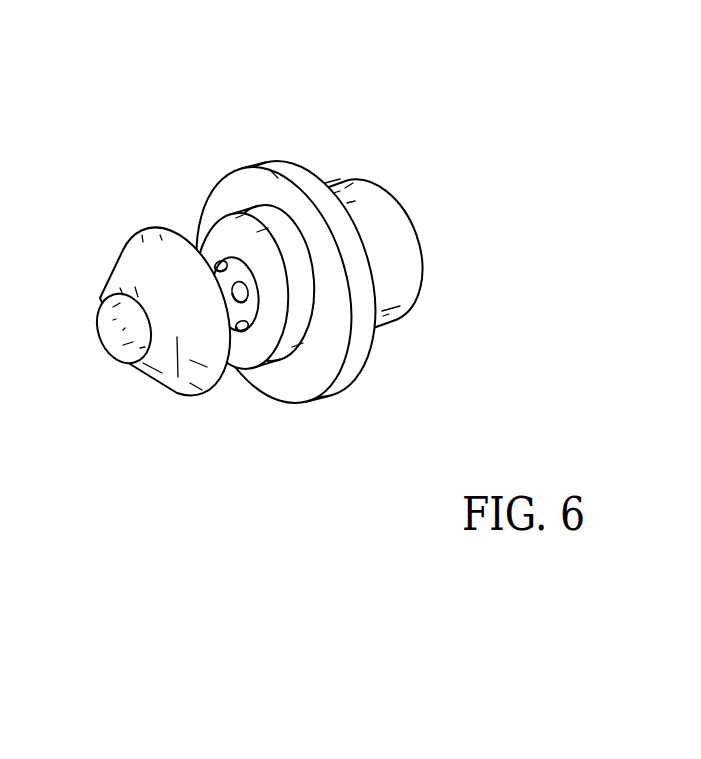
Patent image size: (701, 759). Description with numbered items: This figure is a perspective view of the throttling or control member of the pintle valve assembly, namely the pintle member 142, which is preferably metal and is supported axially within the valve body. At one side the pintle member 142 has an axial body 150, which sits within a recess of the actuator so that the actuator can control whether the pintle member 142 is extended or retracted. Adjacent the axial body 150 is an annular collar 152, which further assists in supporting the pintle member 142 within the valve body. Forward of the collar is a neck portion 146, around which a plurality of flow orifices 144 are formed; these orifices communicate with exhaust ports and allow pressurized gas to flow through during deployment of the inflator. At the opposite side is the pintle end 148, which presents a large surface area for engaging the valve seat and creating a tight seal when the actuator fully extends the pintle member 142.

The pintle member 142 is at (299, 244).
The flow orifices 144 is at (225, 261).
The neck portion 146 is at (270, 345).
The pintle end 148 is at (190, 380).
The axial body 150 is at (383, 228).
The annular collar 152 is at (362, 345).